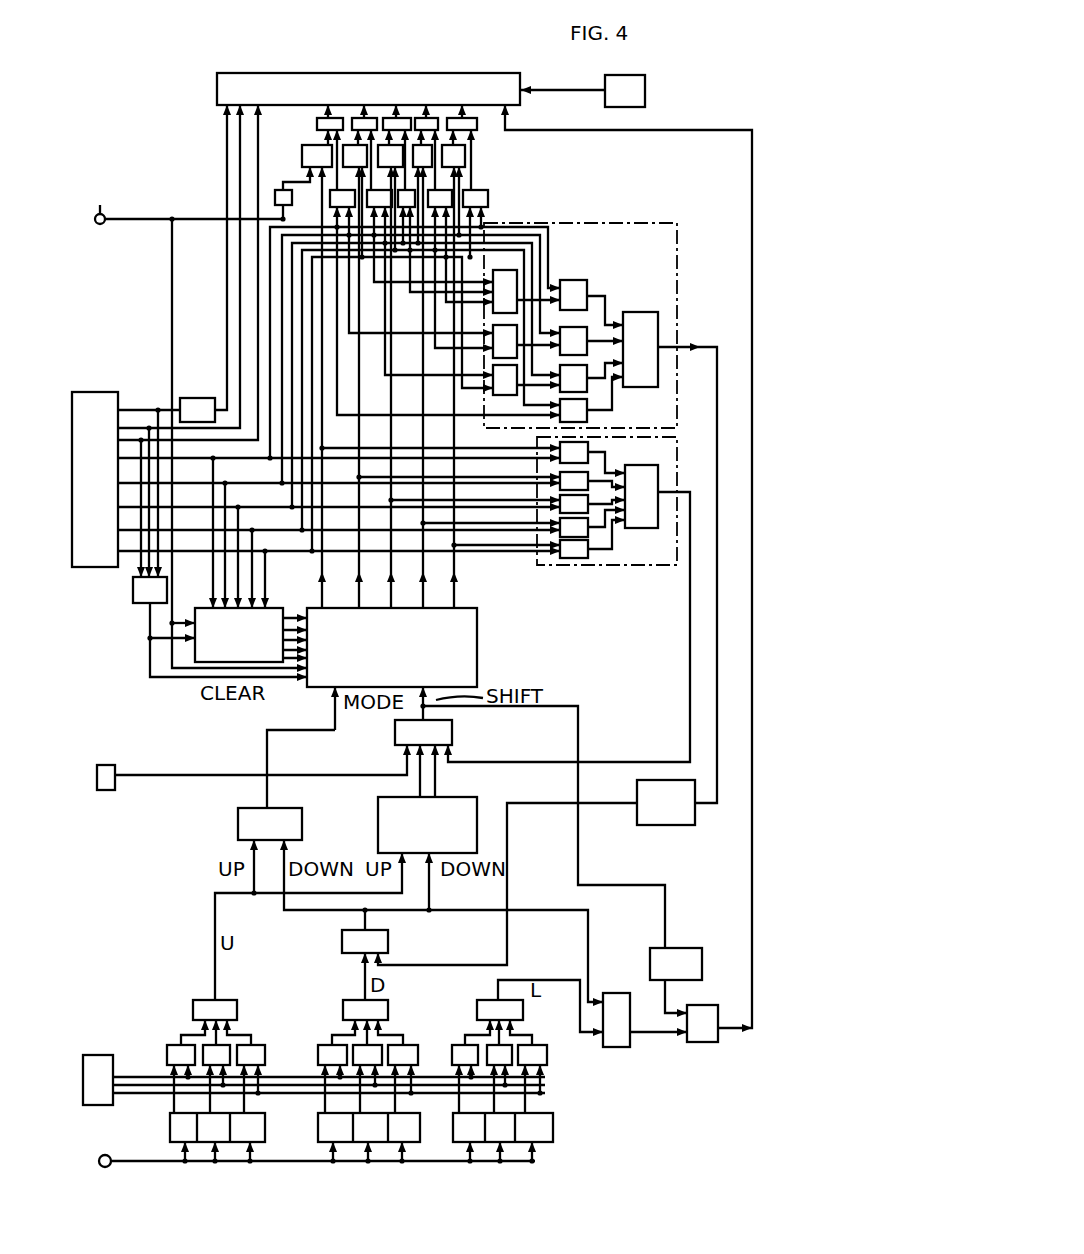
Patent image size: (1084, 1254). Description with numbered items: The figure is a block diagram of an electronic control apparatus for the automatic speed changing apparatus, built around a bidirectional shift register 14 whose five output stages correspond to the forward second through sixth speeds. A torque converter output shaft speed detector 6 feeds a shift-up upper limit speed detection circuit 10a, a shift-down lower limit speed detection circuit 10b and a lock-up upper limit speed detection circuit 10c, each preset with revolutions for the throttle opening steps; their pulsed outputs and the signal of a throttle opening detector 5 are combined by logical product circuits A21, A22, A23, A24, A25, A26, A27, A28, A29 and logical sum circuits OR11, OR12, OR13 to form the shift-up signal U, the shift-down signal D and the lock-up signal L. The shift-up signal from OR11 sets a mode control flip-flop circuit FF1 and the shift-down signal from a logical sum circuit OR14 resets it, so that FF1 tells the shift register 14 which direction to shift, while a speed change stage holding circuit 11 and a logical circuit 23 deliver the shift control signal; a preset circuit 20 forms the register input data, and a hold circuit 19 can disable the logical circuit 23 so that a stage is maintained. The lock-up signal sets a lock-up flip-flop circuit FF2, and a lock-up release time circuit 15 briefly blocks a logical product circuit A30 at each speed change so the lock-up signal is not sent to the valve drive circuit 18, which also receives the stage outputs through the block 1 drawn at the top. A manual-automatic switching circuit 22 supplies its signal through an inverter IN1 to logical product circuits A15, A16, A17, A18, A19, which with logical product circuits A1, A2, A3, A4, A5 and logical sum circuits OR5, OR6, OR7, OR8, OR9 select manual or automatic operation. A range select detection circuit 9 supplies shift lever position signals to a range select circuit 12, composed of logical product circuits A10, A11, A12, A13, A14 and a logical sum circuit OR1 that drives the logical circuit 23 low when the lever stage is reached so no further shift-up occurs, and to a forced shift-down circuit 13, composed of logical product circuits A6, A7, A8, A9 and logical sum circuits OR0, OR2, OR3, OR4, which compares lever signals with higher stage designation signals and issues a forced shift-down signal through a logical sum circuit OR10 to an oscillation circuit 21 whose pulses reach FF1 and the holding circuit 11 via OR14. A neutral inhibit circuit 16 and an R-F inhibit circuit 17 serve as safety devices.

The display register 1 is at (141, 154).
The throttle opening detector 5 is at (93, 1055).
The torque converter output shaft speed detector 6 is at (100, 1157).
The range select detection circuit 9 is at (99, 391).
The shift-up upper limit speed detection circuit 10a is at (265, 1136).
The shift-down lower limit speed detection circuit 10b is at (420, 1136).
The lock-up upper limit speed detection circuit 10c is at (553, 1128).
The speed change stage holding circuit 11 is at (480, 810).
The range select circuit 12 is at (622, 494).
The forced shift-down circuit 13 is at (680, 258).
The bidirectional shift register 14 is at (478, 640).
The lock-up release time circuit 15 is at (689, 948).
The neutral inhibit circuit 16 is at (645, 92).
The R-F inhibit circuit 17 is at (197, 398).
The valve drive circuit 18 is at (563, 93).
The hold circuit 19 is at (101, 765).
The preset circuit 20 is at (197, 608).
The oscillation circuit 21 is at (696, 815).
The manual-automatic switching circuit 22 is at (180, 201).
The logical circuit 23 is at (395, 739).
The mode control flip-flop circuit FF1 is at (302, 824).
The lock-up flip-flop circuit FF2 is at (618, 993).
The inverter IN1 is at (275, 197).
The logical product circuit A1 is at (330, 200).
The logical product circuit A2 is at (372, 207).
The logical product circuit A3 is at (407, 207).
The logical product circuit A4 is at (440, 207).
The logical product circuit A5 is at (488, 202).
The logical product circuit A6 is at (586, 291).
The logical product circuit A7 is at (587, 333).
The logical product circuit A8 is at (587, 388).
The logical product circuit A9 is at (587, 418).
The logical product circuit A10 is at (605, 452).
The logical product circuit A11 is at (560, 482).
The logical product circuit A12 is at (560, 504).
The logical product circuit A13 is at (560, 530).
The logical product circuit A14 is at (575, 558).
The logical product circuit A15 is at (302, 152).
The logical product circuit A16 is at (343, 160).
The logical product circuit A17 is at (403, 156).
The logical product circuit A18 is at (432, 160).
The logical product circuit A19 is at (465, 166).
The logical product circuit A21 is at (175, 1045).
The logical product circuit A22 is at (230, 1048).
The logical product circuit A23 is at (259, 1045).
The logical product circuit A24 is at (318, 1051).
The logical product circuit A25 is at (382, 1046).
The logical product circuit A26 is at (410, 1045).
The logical product circuit A27 is at (456, 1048).
The logical product circuit A28 is at (510, 1045).
The logical product circuit A29 is at (547, 1054).
The logical product circuit A30 is at (705, 1042).
The logical sum circuit OR0 is at (658, 315).
The logical sum circuit OR1 is at (637, 528).
The logical sum circuit OR2 is at (517, 283).
The logical sum circuit OR3 is at (517, 340).
The logical sum circuit OR4 is at (517, 370).
The logical sum circuit OR5 is at (317, 123).
The logical sum circuit OR6 is at (355, 118).
The logical sum circuit OR7 is at (387, 118).
The logical sum circuit OR8 is at (434, 118).
The logical sum circuit OR9 is at (474, 118).
The logical sum circuit OR10 is at (133, 590).
The logical sum circuit OR11 is at (230, 1000).
The logical sum circuit OR12 is at (348, 1000).
The logical sum circuit OR13 is at (490, 1000).
The logical sum circuit OR14 is at (388, 942).